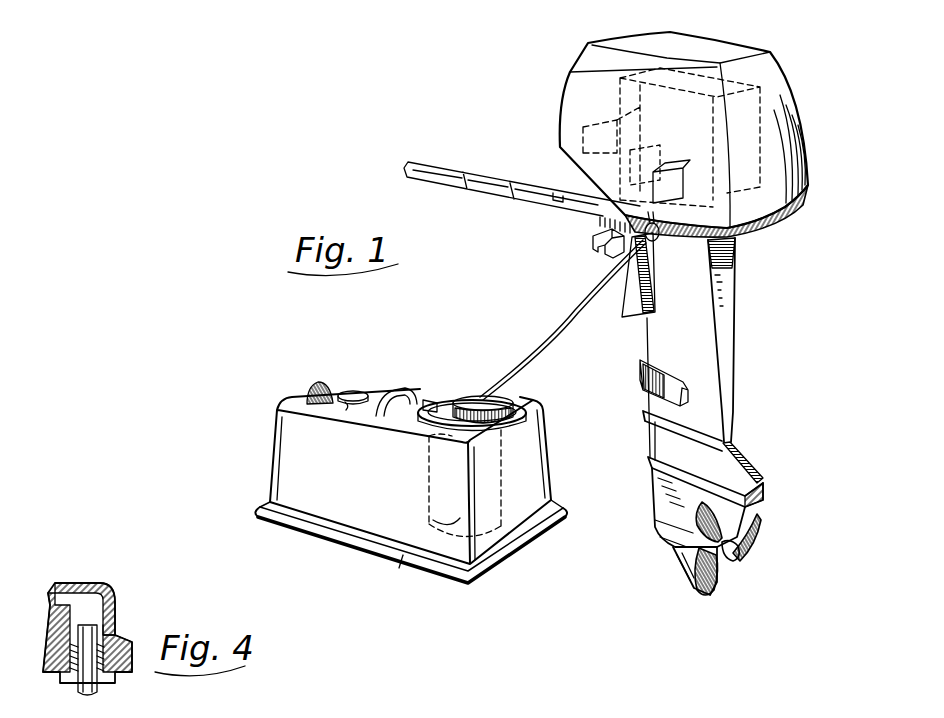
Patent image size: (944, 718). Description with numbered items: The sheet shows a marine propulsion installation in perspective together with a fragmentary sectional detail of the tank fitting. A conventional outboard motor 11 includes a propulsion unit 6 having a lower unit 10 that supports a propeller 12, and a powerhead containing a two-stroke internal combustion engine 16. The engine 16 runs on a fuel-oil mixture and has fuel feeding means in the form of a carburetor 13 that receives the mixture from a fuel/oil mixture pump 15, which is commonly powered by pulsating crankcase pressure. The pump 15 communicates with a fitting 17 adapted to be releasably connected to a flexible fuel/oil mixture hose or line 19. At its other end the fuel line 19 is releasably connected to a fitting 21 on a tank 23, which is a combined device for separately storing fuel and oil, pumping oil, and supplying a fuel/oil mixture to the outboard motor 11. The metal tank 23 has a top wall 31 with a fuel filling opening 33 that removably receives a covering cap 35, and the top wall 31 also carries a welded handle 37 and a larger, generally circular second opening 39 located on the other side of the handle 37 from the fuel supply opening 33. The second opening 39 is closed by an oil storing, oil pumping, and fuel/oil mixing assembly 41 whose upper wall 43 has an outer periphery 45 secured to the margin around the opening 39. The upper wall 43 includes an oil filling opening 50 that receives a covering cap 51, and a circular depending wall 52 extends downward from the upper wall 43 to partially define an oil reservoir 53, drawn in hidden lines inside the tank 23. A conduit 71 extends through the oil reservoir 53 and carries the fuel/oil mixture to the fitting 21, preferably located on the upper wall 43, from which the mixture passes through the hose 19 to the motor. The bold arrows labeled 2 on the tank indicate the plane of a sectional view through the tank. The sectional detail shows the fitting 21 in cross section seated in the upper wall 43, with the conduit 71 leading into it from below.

In FIG. 1, the section view arrows 2 is at (406, 407).
In FIG. 1, the propulsion unit 6 is at (743, 358).
In FIG. 1, the lower unit 10 is at (746, 428).
In FIG. 1, the outboard motor 11 is at (625, 313).
In FIG. 1, the propeller 12 is at (758, 518).
In FIG. 1, the carburetor 13 is at (580, 123).
In FIG. 1, the fuel/oil mixture pump 15 is at (668, 166).
In FIG. 1, the two-stroke internal combustion engine 16 is at (750, 112).
In FIG. 1, the fitting 17 is at (659, 243).
In FIG. 1, the fuel/oil mixture hose 19 is at (592, 278).
In FIG. 1, the fitting 21 is at (496, 386).
In FIG. 4, the fitting 21 is at (100, 620).
In FIG. 1, the tank 23 is at (418, 461).
In FIG. 1, the top wall 31 is at (297, 404).
In FIG. 1, the fuel supply opening 33 is at (346, 410).
In FIG. 1, the covering cap 35 is at (354, 391).
In FIG. 1, the handle 37 is at (397, 388).
In FIG. 1, the second opening 39 is at (432, 452).
In FIG. 1, the oil storing, oil pumping, and fuel/oil mixing assembly 41 is at (507, 478).
In FIG. 1, the upper wall 43 is at (517, 403).
In FIG. 4, the upper wall 43 is at (121, 648).
In FIG. 1, the outer periphery 45 is at (410, 430).
In FIG. 1, the oil supply opening 50 is at (412, 447).
In FIG. 1, the covering cap 51 is at (524, 386).
In FIG. 1, the depending wall 52 is at (442, 493).
In FIG. 1, the oil reservoir 53 is at (395, 571).
In FIG. 4, the conduit 71 is at (98, 690).